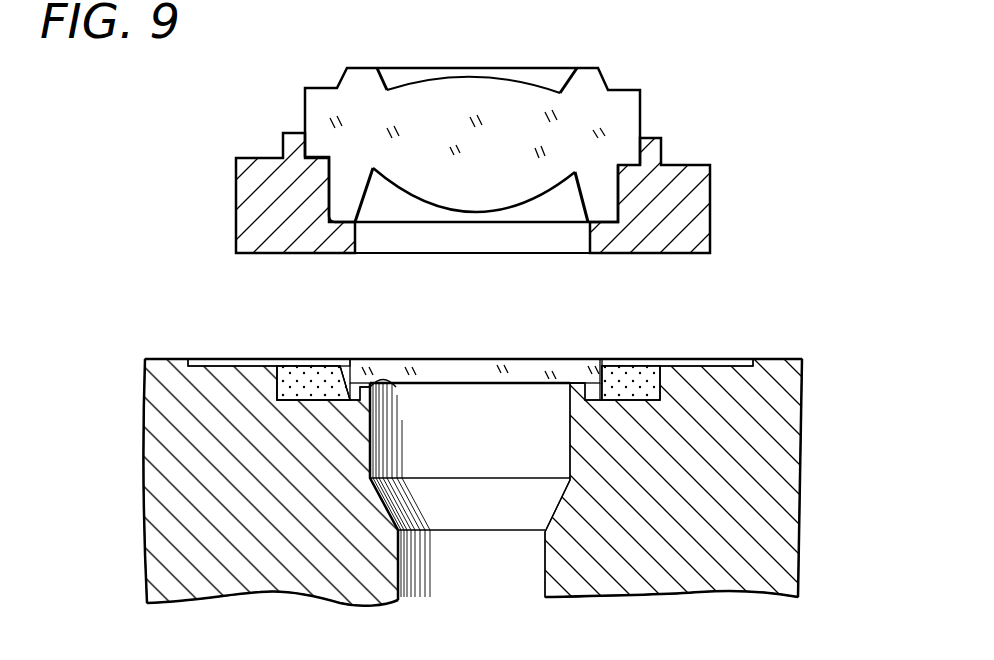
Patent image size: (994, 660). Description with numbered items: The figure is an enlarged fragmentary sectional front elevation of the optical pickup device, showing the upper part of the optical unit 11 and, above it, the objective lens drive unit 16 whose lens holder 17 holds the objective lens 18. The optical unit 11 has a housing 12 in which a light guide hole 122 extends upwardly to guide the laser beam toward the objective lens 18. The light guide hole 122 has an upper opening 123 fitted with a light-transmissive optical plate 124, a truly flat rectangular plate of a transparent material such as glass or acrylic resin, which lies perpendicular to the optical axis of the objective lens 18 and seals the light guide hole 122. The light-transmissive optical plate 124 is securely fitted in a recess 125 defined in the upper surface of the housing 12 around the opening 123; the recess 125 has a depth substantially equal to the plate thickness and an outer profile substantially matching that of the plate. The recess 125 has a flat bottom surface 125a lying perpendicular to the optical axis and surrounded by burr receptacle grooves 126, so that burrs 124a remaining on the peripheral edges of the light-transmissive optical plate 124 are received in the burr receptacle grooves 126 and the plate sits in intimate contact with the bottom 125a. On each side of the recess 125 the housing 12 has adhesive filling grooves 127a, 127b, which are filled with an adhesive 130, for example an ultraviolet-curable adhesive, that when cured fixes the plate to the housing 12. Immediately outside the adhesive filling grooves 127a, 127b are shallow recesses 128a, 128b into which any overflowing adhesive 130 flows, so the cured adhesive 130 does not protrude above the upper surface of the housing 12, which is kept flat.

The objective lens drive unit 16 is at (239, 125).
The lens holder 17 is at (657, 172).
The objective lens 18 is at (500, 90).
The optical unit 11 is at (820, 422).
The housing 12 is at (772, 513).
The light guide hole 122 is at (546, 560).
The upper opening 123 is at (573, 387).
The light-transmissive optical plate 124 is at (480, 359).
The burrs 124a is at (350, 400).
The recess 125 is at (347, 380).
The flat bottom surface 125a is at (400, 388).
The burr receptacle grooves 126 is at (418, 585).
The adhesive filling groove 127a is at (287, 377).
The adhesive filling groove 127b is at (703, 363).
The shallow recess 128a is at (213, 362).
The shallow recess 128b is at (752, 364).
The adhesive 130 is at (307, 370).